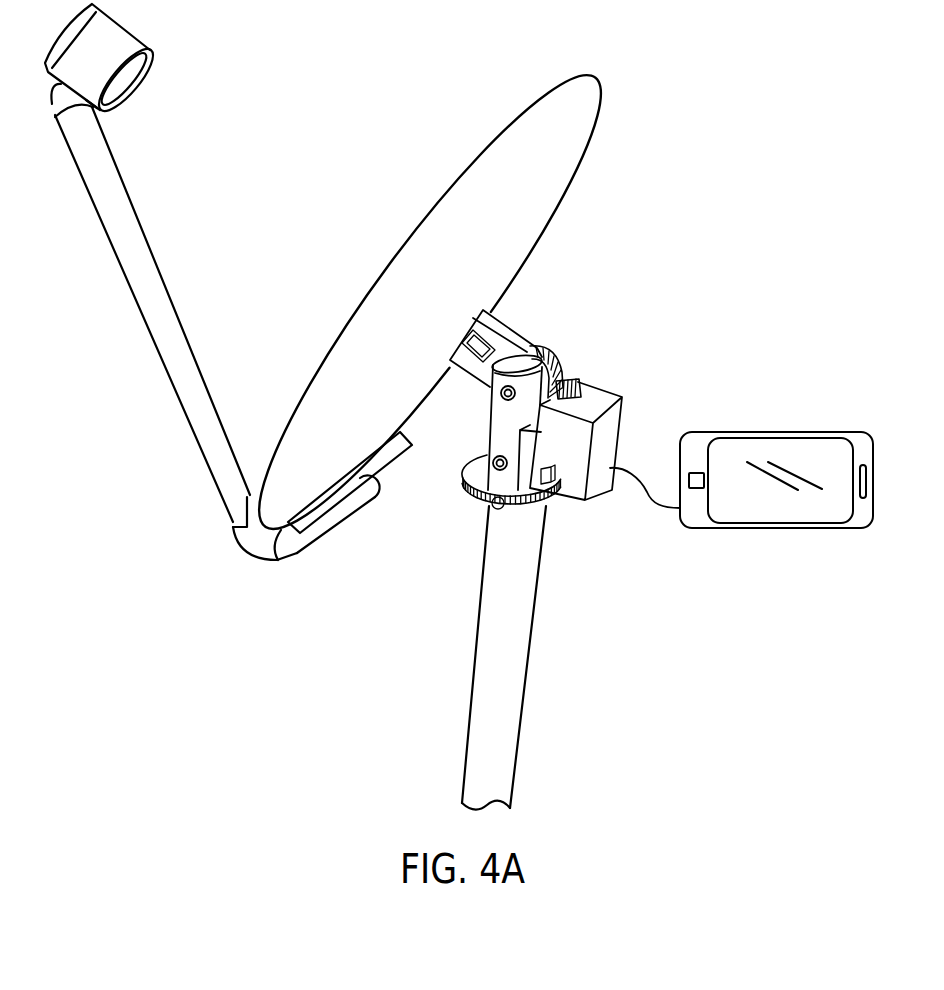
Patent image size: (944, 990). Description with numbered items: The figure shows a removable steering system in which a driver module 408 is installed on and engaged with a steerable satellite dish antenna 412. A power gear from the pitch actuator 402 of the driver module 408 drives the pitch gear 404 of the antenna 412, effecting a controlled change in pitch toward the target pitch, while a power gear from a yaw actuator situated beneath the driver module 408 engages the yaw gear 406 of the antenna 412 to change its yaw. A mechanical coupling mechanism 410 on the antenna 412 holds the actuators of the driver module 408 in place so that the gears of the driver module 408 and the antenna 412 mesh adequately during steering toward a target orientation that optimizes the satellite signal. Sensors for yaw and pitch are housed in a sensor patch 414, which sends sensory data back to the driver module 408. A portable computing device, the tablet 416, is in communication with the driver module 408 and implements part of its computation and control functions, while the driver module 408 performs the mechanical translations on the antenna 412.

The pitch actuator 402 is at (570, 380).
The pitch gear 404 is at (555, 357).
The yaw gear 406 is at (472, 490).
The driver module 408 is at (617, 398).
The mechanical coupling mechanism 410 is at (527, 455).
The antenna 412 is at (570, 143).
The sensor patch 414 is at (475, 355).
The tablet device 416 is at (728, 432).